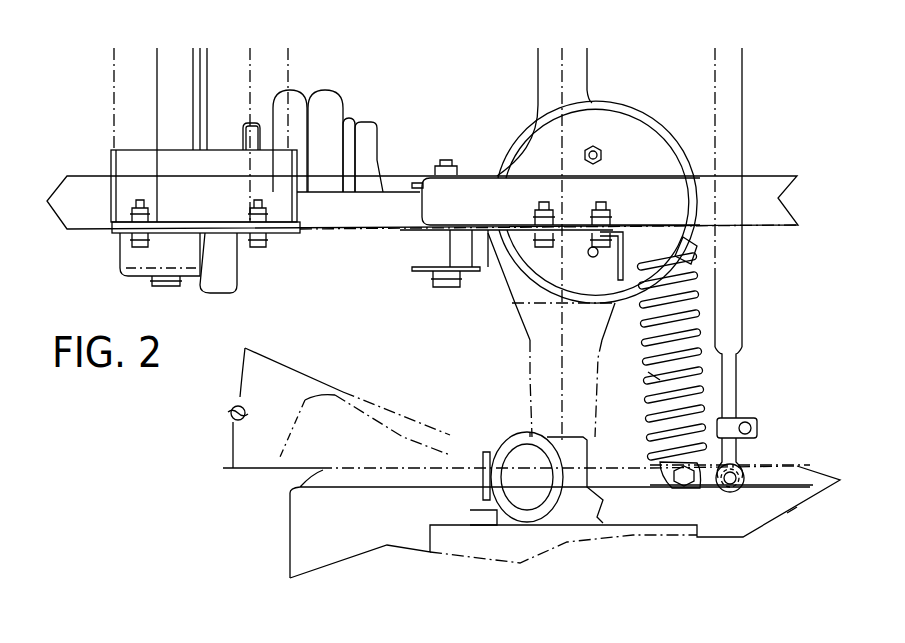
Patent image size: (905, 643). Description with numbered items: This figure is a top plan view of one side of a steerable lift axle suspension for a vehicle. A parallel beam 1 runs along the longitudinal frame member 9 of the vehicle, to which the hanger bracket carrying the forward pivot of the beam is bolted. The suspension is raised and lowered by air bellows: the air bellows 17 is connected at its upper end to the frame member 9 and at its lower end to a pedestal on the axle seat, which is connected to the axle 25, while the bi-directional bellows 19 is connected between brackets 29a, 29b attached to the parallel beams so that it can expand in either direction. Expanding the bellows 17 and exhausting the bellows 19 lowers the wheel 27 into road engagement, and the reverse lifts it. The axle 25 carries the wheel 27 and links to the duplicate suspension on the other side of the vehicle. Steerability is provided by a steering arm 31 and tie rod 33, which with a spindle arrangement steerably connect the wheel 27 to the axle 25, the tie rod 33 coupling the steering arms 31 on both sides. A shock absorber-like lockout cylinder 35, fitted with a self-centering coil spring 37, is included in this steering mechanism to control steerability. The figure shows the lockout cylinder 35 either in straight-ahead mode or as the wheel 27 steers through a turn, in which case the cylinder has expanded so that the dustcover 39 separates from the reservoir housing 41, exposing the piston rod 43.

The parallel beam 1 is at (352, 252).
The longitudinal frame member 9 is at (88, 193).
The air bellows 17 is at (647, 120).
The bi-directional bellows 19 is at (330, 100).
The axle 25 is at (537, 395).
The wheel 27 is at (303, 522).
The bracket 29a is at (365, 142).
The bracket 29b is at (243, 138).
The steering arm 31 is at (667, 483).
The tie rod 33 is at (733, 380).
The lockout cylinder 35 is at (700, 323).
The self-centering coil spring 37 is at (697, 390).
The dustcover 39 is at (657, 435).
The reservoir housing 41 is at (645, 318).
The piston rod 43 is at (650, 375).